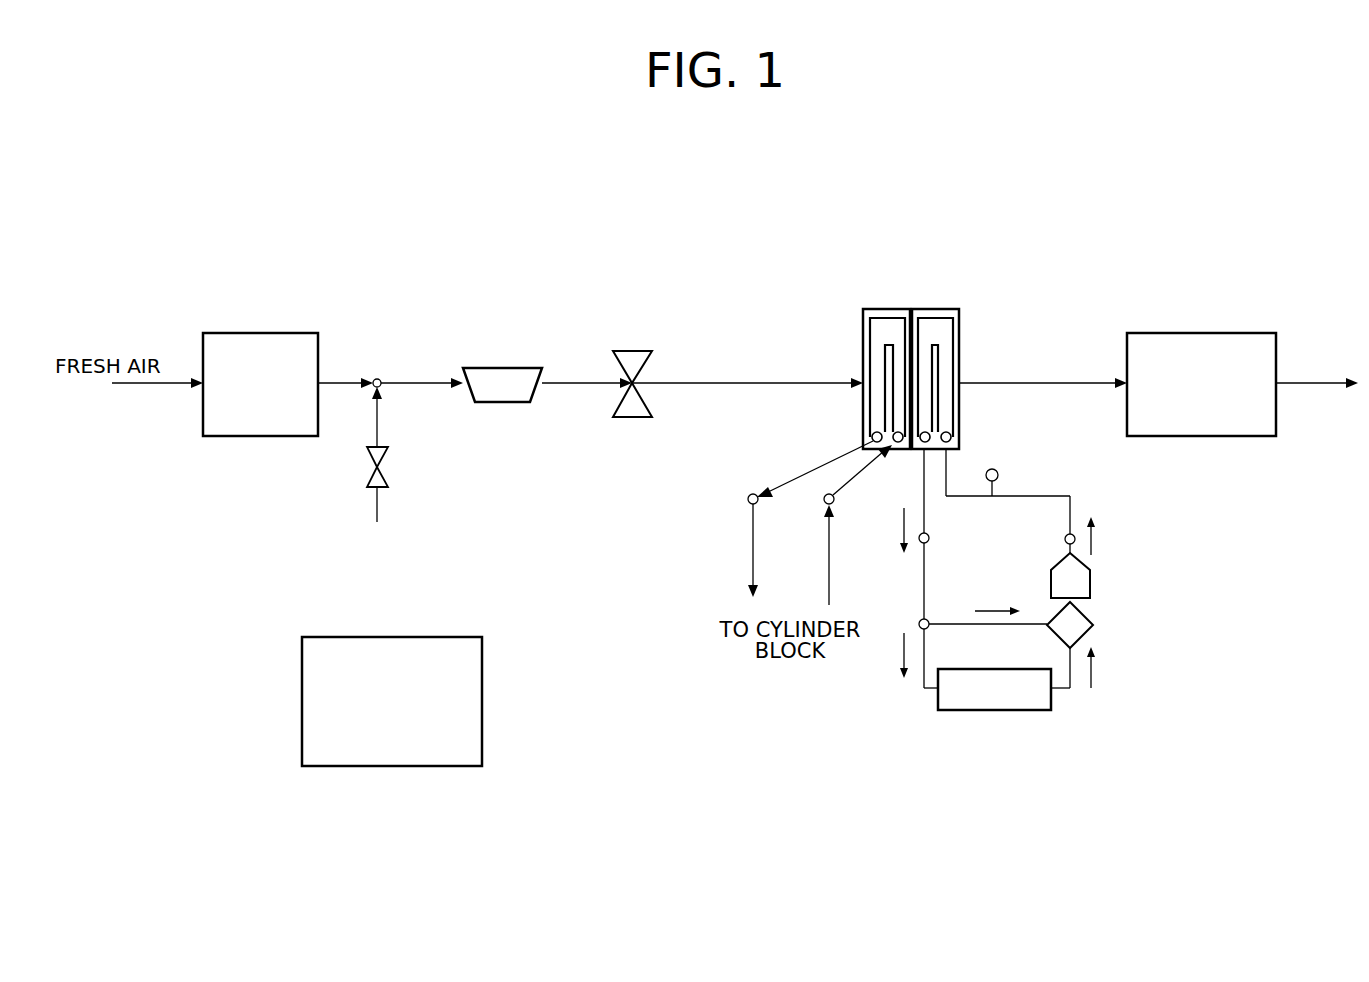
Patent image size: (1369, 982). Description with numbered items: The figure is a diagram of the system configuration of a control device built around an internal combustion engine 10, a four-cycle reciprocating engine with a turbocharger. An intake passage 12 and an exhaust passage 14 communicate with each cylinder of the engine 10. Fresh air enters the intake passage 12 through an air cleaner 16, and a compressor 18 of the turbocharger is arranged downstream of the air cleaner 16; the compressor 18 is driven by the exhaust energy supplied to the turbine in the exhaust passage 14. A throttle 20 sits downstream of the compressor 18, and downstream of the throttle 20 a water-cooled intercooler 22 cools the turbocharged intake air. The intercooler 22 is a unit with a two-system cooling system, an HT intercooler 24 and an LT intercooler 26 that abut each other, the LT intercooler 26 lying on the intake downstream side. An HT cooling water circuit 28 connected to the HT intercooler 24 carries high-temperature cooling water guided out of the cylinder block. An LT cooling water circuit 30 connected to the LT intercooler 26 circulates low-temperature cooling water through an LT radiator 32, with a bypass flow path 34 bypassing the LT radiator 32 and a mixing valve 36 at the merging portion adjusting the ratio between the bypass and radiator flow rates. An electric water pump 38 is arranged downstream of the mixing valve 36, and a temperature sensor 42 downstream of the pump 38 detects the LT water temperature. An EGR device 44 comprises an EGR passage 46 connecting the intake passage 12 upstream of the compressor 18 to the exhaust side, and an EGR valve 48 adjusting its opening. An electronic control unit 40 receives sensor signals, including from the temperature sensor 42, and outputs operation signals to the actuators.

The internal combustion engine 10 is at (1200, 437).
The intake passage 12 is at (1024, 380).
The exhaust passage 14 is at (1303, 380).
The air cleaner 16 is at (255, 437).
The compressor 18 is at (500, 403).
The throttle 20 is at (632, 418).
The water-cooled intercooler 22 is at (872, 334).
The HT intercooler 24 is at (881, 308).
The LT intercooler 26 is at (933, 308).
The HT cooling water circuit 28 is at (787, 480).
The LT cooling water circuit 30 is at (922, 585).
The LT radiator 32 is at (992, 712).
The bypass flow path 34 is at (948, 622).
The mixing valve 36 is at (1092, 618).
The electric water pump 38 is at (1092, 585).
The electronic control unit 40 is at (388, 767).
The temperature sensor 42 is at (999, 471).
The EGR device 44 is at (417, 485).
The EGR passage 46 is at (380, 423).
The EGR valve 48 is at (388, 470).